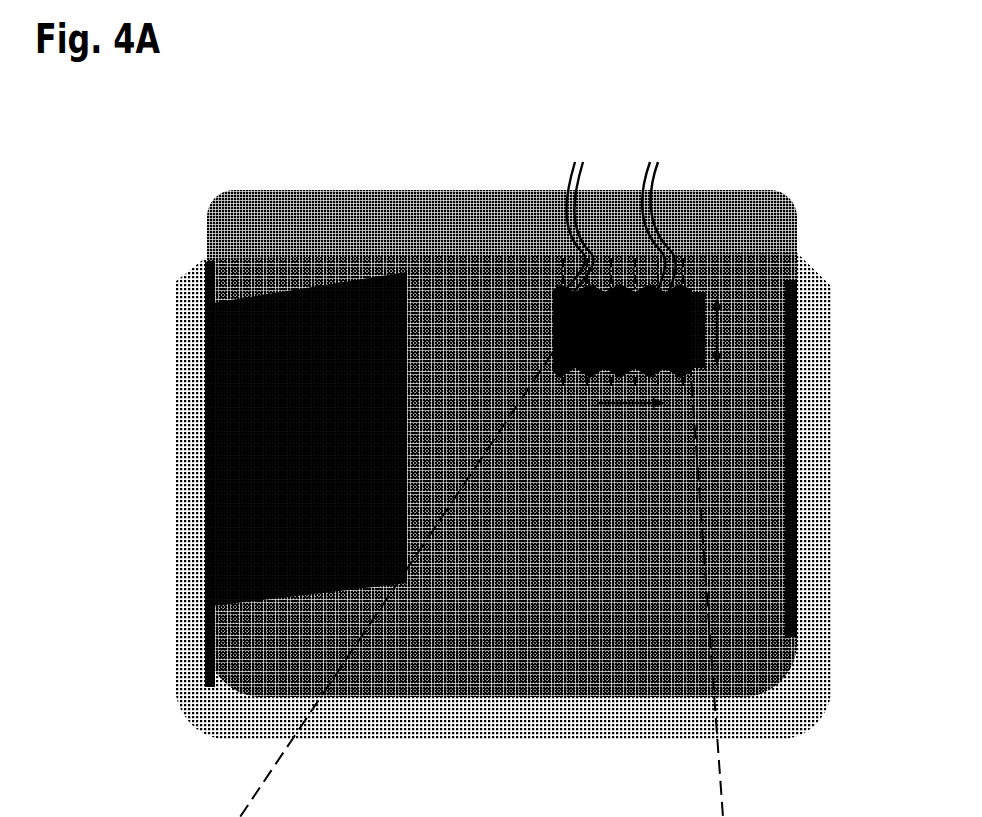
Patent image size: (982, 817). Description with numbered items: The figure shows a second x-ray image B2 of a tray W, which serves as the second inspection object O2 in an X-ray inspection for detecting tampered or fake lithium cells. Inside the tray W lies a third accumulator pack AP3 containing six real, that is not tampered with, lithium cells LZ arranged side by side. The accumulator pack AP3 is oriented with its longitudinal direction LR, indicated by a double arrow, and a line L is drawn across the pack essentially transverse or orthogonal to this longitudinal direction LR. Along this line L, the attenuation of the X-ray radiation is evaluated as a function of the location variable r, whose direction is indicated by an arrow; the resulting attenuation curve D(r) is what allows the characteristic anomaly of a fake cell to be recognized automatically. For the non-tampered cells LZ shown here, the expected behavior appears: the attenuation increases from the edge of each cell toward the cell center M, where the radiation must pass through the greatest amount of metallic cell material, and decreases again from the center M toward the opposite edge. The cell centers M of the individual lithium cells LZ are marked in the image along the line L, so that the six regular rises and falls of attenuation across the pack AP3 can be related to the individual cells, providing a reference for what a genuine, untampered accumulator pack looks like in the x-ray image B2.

The second x-ray image B2 is at (193, 210).
The tray W is at (188, 481).
The second inspection object O2 is at (763, 424).
The third accumulator pack AP3 is at (708, 281).
The lithium cells LZ is at (618, 215).
The cell center M is at (631, 258).
The line L is at (576, 373).
The location variable r is at (625, 404).
The longitudinal direction LR is at (718, 340).